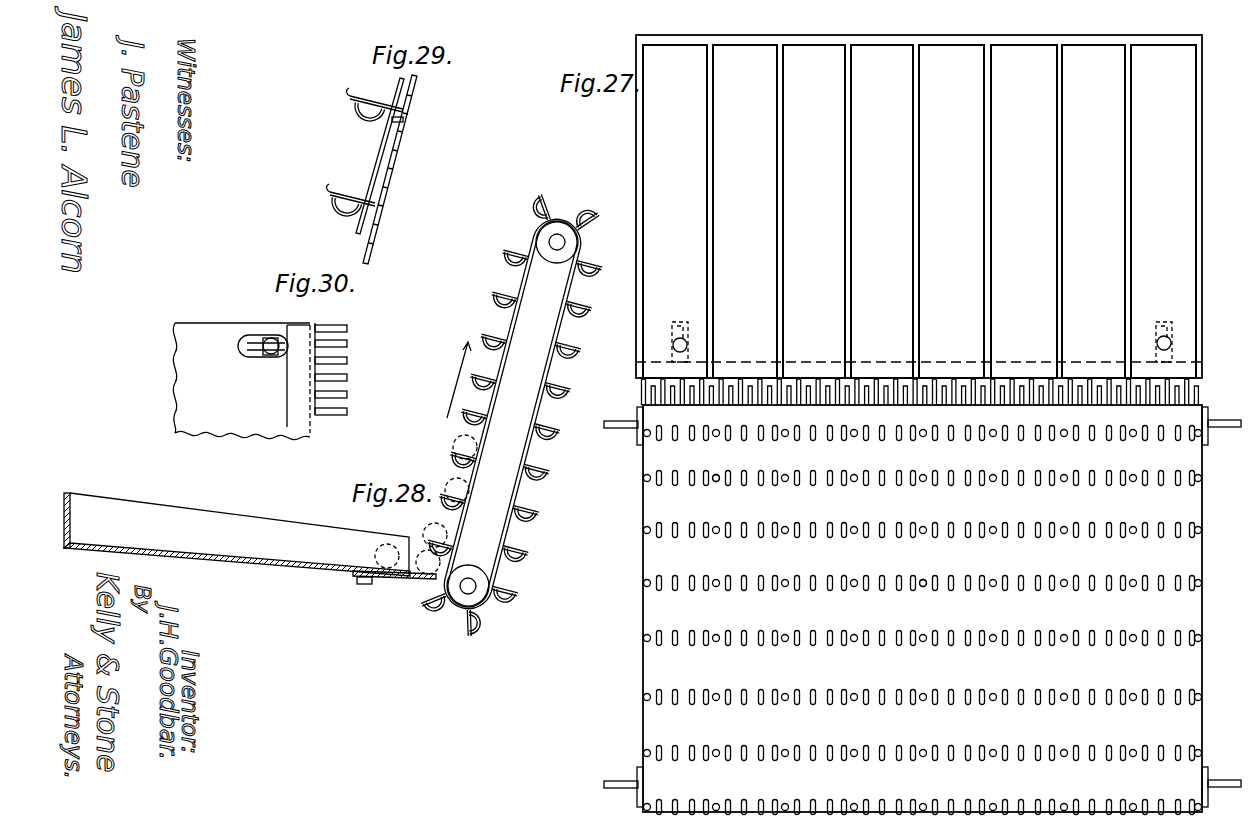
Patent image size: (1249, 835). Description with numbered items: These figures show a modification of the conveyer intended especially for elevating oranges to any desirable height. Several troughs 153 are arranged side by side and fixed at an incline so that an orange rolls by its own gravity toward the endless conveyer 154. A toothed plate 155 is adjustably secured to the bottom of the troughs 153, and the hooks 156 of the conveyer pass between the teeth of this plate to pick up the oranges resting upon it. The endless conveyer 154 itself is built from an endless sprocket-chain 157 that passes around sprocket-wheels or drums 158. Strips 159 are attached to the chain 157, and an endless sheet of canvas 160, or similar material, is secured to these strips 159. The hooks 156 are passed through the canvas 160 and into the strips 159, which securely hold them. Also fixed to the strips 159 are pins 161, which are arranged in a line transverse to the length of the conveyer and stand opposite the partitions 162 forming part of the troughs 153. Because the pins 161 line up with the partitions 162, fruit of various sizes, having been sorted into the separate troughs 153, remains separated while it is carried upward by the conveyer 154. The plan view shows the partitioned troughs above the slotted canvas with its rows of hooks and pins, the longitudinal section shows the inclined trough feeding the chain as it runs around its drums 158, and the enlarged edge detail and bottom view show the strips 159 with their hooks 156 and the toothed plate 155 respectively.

In FIG. 27, the troughs 153 is at (636, 136).
In FIG. 28, the troughs 153 is at (307, 571).
In FIG. 30, the troughs 153 is at (271, 318).
In FIG. 28, the endless conveyer 154 is at (520, 485).
In FIG. 27, the toothed plate 155 is at (1098, 378).
In FIG. 28, the toothed plate 155 is at (414, 580).
In FIG. 30, the toothed plate 155 is at (318, 326).
In FIG. 27, the hooks 156 is at (884, 482).
In FIG. 28, the hooks 156 is at (429, 503).
In FIG. 27, the endless sprocket-chain 157 is at (643, 468).
In FIG. 28, the endless sprocket-chain 157 is at (546, 398).
In FIG. 29, the endless sprocket-chain 157 is at (402, 138).
In FIG. 27, the sprocket-wheels or drums 158 is at (638, 778).
In FIG. 28, the sprocket-wheels or drums 158 is at (578, 247).
In FIG. 29, the strips 159 is at (384, 207).
In FIG. 28, the endless sheet of canvas 160 is at (549, 365).
In FIG. 29, the endless sheet of canvas 160 is at (357, 161).
In FIG. 27, the pins 161 is at (716, 482).
In FIG. 28, the pins 161 is at (449, 454).
In FIG. 29, the pins 161 is at (364, 142).
In FIG. 27, the partitions 162 is at (777, 288).
In FIG. 28, the partitions 162 is at (352, 534).